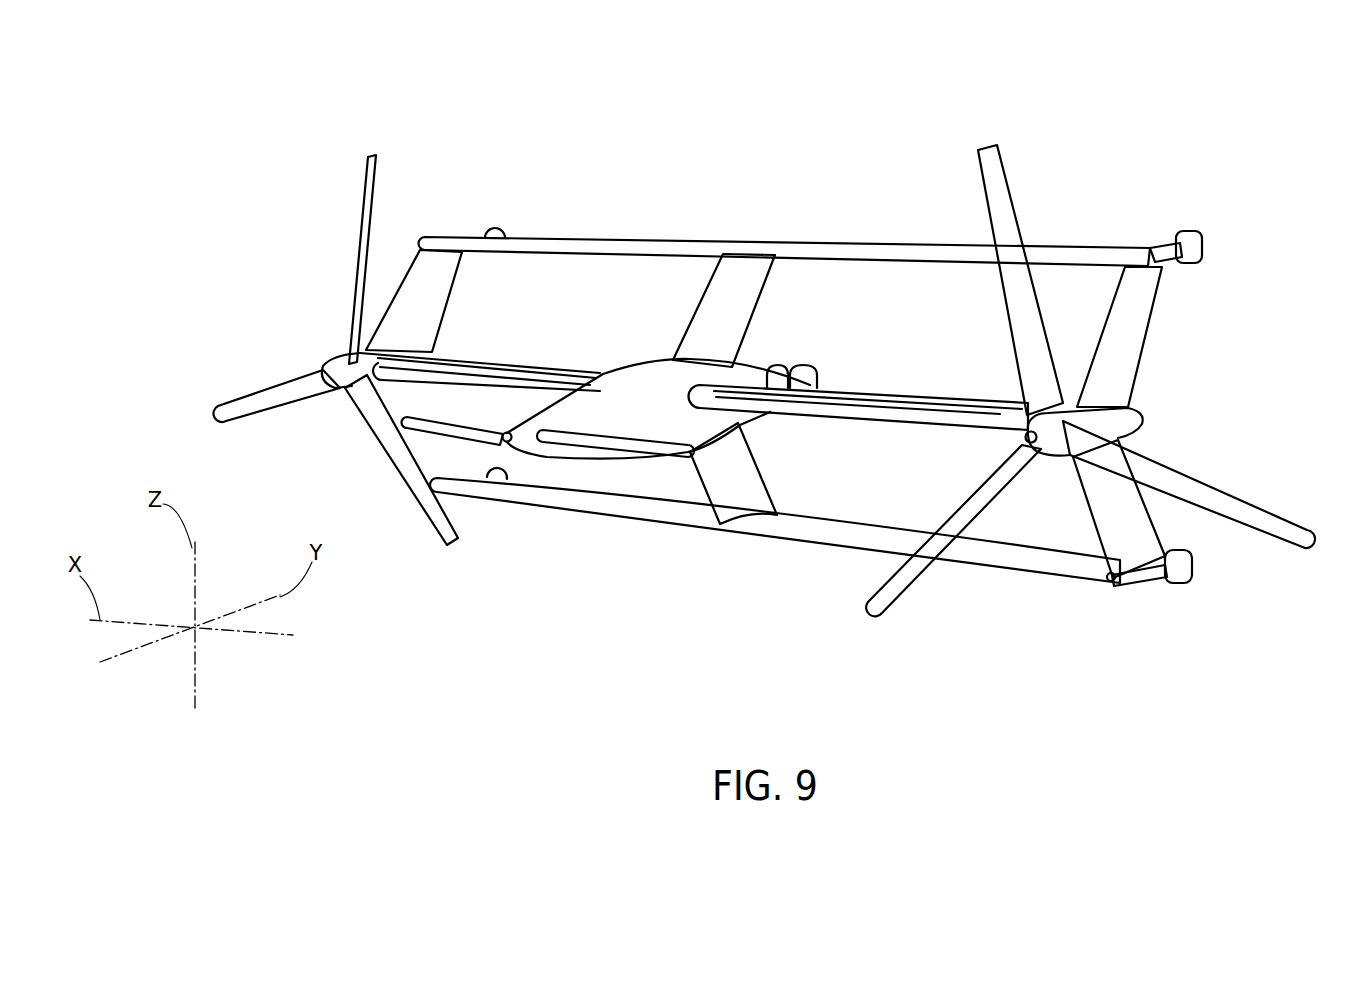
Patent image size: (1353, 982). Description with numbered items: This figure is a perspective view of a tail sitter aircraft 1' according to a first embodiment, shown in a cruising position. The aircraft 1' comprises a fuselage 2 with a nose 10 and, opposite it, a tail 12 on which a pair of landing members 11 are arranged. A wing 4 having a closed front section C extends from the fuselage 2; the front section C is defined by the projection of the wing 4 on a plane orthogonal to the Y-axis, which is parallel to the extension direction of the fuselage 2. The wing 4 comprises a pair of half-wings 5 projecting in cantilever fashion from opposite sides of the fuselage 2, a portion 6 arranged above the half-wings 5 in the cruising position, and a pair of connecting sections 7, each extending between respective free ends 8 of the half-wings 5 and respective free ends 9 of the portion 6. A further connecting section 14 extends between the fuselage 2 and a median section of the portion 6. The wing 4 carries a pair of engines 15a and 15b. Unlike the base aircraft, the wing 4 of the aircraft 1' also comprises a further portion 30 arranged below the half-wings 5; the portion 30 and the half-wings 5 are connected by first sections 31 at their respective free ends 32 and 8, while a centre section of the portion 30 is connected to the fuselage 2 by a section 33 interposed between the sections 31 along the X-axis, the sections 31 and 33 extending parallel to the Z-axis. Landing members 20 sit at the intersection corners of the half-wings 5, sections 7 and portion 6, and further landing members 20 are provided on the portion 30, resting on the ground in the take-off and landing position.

The tail sitter aircraft 1' is at (1305, 97).
The fuselage 2 is at (638, 385).
The wing 4 is at (778, 216).
The half-wings 5 is at (552, 375).
The portion 6 is at (696, 247).
The connecting sections 7 is at (437, 298).
The free ends of the half-wings 8 is at (342, 362).
The free ends of portion 9 is at (428, 236).
The nose 10 is at (522, 441).
The landing members 11 is at (795, 366).
The tail 12 is at (758, 372).
The further connecting section 14 is at (705, 312).
The engine 15a is at (310, 448).
The engine 15b is at (1284, 437).
The landing members 20 is at (494, 228).
The further portion 30 is at (822, 546).
The first sections 31 is at (428, 442).
The free ends of portion 30 32 is at (447, 482).
The section 33 is at (756, 476).
The closed front section C is at (598, 234).